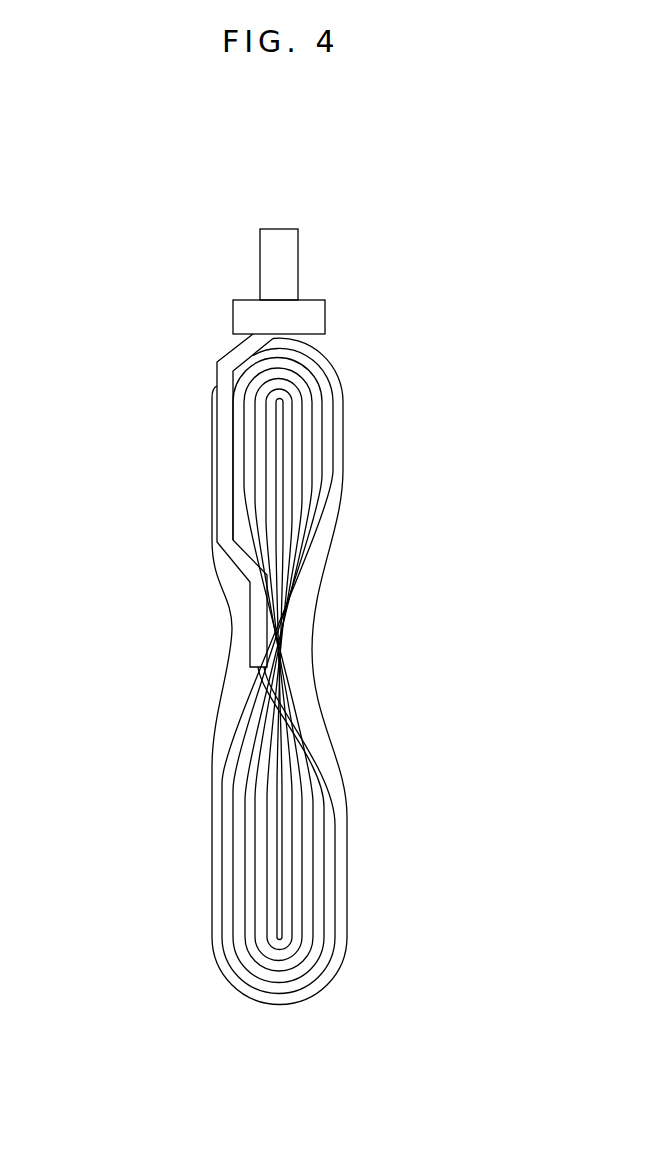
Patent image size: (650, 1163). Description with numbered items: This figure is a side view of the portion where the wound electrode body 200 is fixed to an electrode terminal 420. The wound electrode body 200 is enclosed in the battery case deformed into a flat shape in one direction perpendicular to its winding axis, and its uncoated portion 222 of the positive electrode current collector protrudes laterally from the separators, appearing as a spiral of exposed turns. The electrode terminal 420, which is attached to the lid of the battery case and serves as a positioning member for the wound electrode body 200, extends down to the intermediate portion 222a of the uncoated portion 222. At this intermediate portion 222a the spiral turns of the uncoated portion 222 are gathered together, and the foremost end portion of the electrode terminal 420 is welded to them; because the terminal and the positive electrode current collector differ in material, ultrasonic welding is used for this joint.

The electrode terminal 420 is at (468, 241).
The wound electrode body 200 is at (206, 547).
The intermediate portion 222a is at (250, 623).
The uncoated portion 222 is at (325, 767).